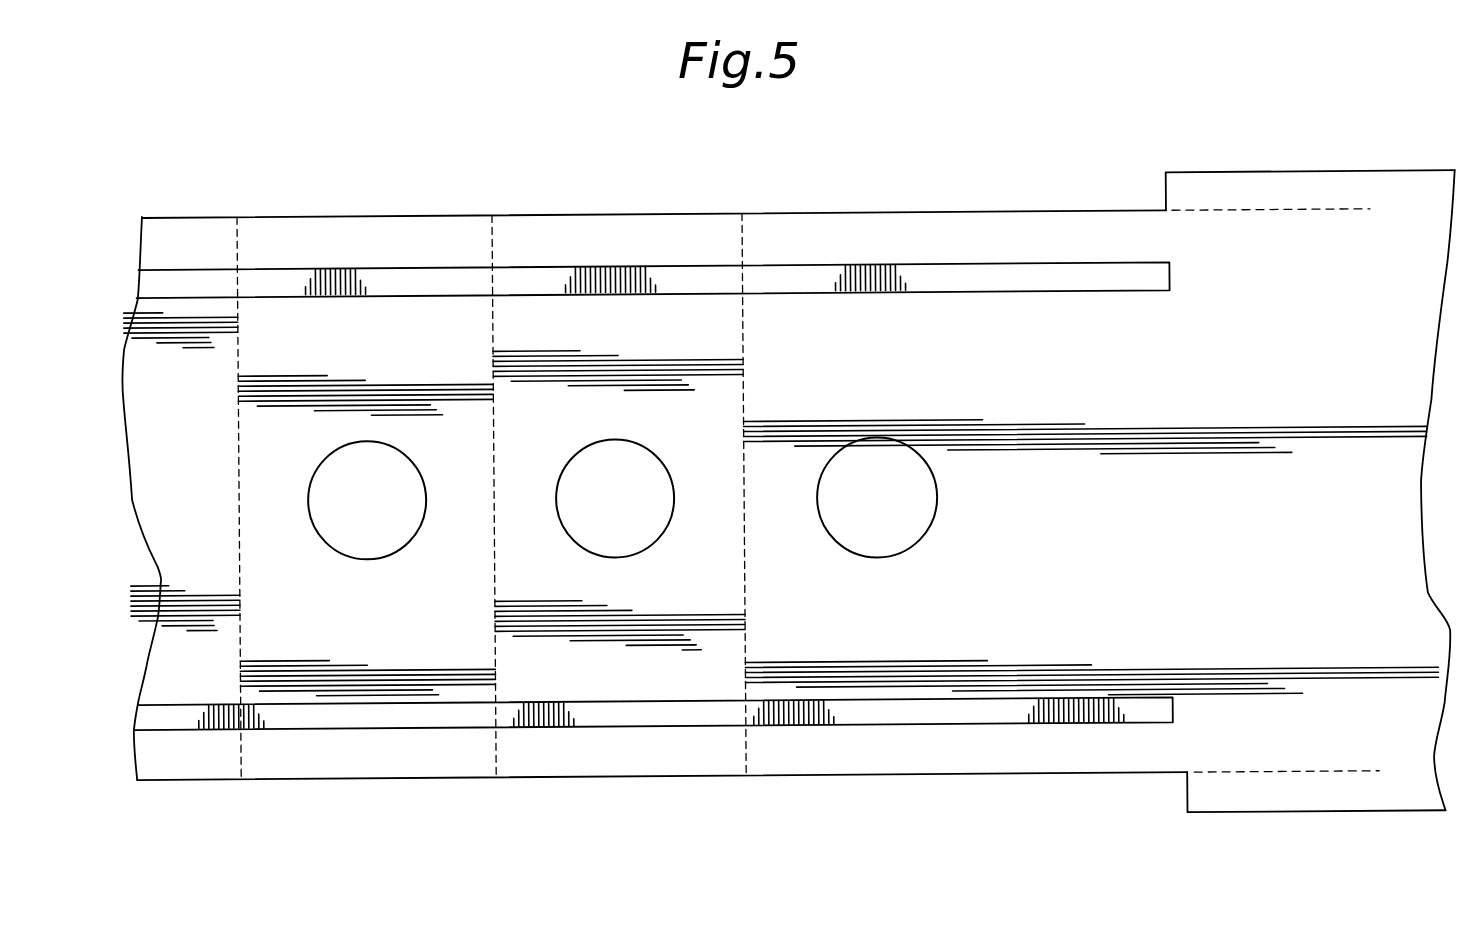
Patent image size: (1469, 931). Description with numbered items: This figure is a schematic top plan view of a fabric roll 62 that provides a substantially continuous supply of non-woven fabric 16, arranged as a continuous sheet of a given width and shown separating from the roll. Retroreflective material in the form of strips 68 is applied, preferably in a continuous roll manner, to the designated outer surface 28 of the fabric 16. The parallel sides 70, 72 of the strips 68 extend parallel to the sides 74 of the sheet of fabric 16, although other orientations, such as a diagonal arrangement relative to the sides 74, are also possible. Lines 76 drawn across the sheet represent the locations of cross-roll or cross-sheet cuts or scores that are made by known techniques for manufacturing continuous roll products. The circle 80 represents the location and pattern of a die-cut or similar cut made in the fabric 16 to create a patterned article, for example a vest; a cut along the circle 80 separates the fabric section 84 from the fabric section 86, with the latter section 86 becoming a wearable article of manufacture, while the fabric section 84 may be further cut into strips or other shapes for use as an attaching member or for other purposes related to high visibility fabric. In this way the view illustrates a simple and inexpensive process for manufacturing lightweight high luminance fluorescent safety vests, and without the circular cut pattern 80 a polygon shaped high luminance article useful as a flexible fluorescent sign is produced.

The fabric 16 is at (1093, 218).
The designated outer surface 28 is at (949, 240).
The fabric roll 62 is at (1320, 180).
The strips 68 is at (684, 284).
The parallel side of strip 70 is at (1025, 732).
The parallel side of strip 72 is at (940, 690).
The sides of the sheet of fabric 74 is at (742, 219).
The lines 76 is at (492, 244).
The circle 80 is at (638, 562).
The fabric section 84 is at (340, 476).
The fabric section 86 is at (362, 234).